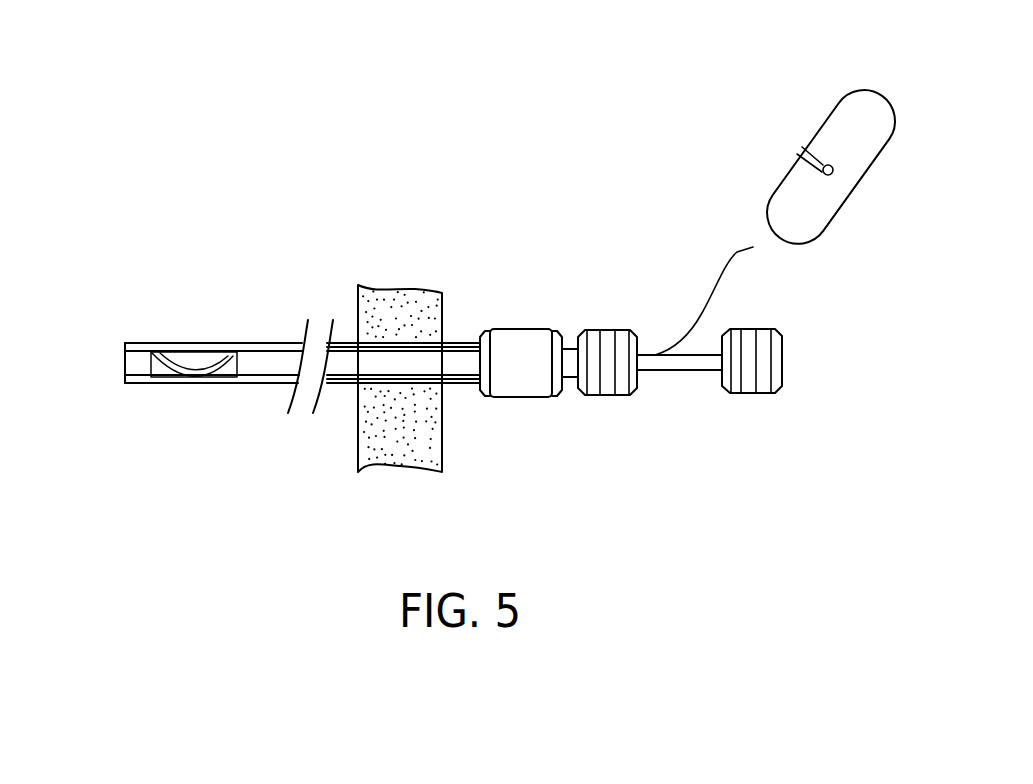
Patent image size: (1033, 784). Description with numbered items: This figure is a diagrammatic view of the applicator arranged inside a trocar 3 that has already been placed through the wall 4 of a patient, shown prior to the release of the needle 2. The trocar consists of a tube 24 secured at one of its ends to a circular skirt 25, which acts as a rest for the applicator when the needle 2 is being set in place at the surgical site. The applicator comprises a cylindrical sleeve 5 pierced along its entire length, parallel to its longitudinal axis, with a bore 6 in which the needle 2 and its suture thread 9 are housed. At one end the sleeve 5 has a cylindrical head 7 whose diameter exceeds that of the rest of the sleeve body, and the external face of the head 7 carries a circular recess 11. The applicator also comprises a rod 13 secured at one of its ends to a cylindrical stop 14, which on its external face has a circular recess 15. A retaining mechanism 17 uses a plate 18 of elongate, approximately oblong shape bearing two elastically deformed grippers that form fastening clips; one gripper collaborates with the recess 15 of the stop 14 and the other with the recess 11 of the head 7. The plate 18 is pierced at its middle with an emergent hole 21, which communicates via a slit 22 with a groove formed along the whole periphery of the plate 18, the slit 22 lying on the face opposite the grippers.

The needle 2 is at (204, 378).
The trocar 3 is at (140, 385).
The wall 4 is at (405, 455).
The cylindrical sleeve 5 is at (572, 368).
The bore 6 is at (194, 352).
The cylindrical head 7 is at (627, 330).
The suture thread 9 is at (735, 252).
The circular recess 11 is at (606, 388).
The rod 13 is at (273, 365).
The cylindrical stop 14 is at (788, 358).
The circular recess 15 is at (751, 385).
The retaining mechanism 17 is at (766, 90).
The plate 18 is at (873, 88).
The emergent hole 21 is at (837, 175).
The slit 22 is at (808, 157).
The tube 24 is at (140, 341).
The circular skirt 25 is at (518, 348).